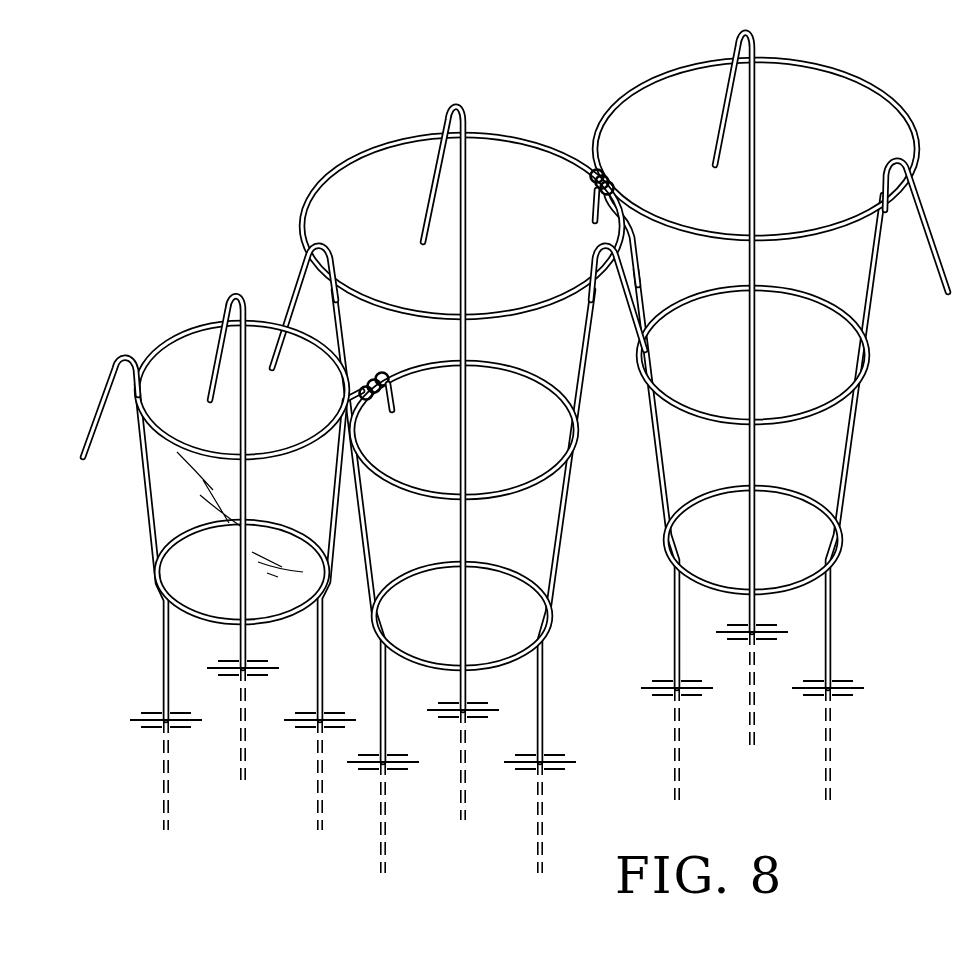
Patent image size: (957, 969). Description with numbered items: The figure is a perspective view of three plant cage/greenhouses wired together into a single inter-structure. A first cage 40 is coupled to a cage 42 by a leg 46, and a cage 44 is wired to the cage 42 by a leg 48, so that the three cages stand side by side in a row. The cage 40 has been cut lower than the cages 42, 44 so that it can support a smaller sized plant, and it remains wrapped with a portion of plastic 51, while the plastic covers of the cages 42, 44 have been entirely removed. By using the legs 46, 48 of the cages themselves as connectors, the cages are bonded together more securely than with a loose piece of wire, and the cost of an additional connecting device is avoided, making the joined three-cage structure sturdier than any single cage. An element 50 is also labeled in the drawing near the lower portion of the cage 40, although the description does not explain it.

The first cage 40 is at (222, 535).
The cage 42 is at (386, 118).
The cage 44 is at (608, 93).
The leg 46 is at (378, 374).
The leg 48 is at (626, 184).
The leg wire 50 is at (147, 530).
The portion of plastic 51 is at (170, 480).